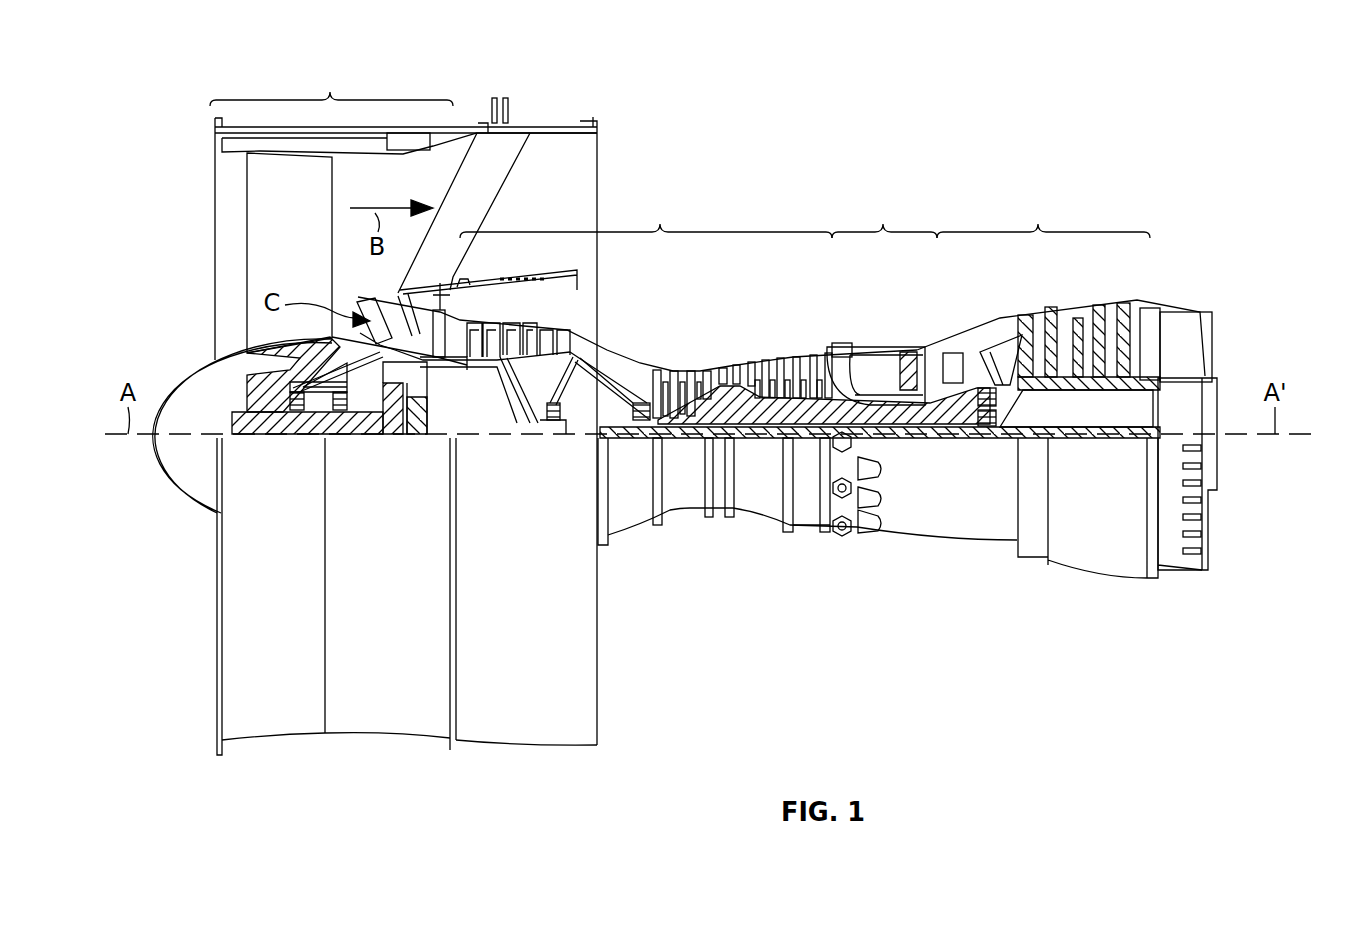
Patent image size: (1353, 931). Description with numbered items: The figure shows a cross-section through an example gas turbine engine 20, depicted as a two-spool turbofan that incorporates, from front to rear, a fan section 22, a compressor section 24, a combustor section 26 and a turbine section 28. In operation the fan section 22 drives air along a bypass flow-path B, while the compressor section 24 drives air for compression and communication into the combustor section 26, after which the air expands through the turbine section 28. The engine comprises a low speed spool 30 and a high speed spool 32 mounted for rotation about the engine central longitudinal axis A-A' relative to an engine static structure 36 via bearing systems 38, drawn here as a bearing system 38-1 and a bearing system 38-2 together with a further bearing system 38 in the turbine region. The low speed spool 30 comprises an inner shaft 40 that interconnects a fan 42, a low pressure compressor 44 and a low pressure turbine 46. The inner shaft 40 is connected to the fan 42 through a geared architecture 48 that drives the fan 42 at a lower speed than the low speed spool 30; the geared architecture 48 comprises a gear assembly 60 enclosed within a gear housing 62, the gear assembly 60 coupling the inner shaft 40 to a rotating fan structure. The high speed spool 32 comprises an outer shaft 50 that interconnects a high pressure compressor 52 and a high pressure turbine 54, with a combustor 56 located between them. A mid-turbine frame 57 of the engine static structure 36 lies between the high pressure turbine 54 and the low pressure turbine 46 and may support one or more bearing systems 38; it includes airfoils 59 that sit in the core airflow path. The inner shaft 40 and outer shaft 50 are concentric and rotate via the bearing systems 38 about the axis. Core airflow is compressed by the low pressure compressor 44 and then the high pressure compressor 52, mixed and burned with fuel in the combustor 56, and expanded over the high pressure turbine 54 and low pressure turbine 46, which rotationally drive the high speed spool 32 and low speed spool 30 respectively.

The gas turbine engine 20 is at (930, 168).
The fan section 22 is at (331, 84).
The compressor section 24 is at (646, 215).
The combustor section 26 is at (884, 215).
The turbine section 28 is at (1043, 215).
The low speed spool 30 is at (768, 441).
The high speed spool 32 is at (805, 405).
The engine static structure 36 is at (201, 752).
The bearing system 38 is at (992, 438).
The bearing system 38-1 is at (298, 434).
The bearing system 38-2 is at (548, 434).
The inner shaft 40 is at (620, 438).
The fan 42 is at (297, 252).
The low pressure compressor section 44 is at (535, 333).
The low pressure turbine section 46 is at (1080, 320).
The geared architecture 48 is at (413, 440).
The outer shaft 50 is at (890, 428).
The high pressure compressor 52 is at (745, 405).
The high pressure turbine section 54 is at (952, 352).
The combustor 56 is at (875, 372).
The mid-turbine frame 57 is at (1000, 370).
The airfoils 59 is at (995, 365).
The gear assembly 60 is at (407, 432).
The gear housing 62 is at (430, 385).